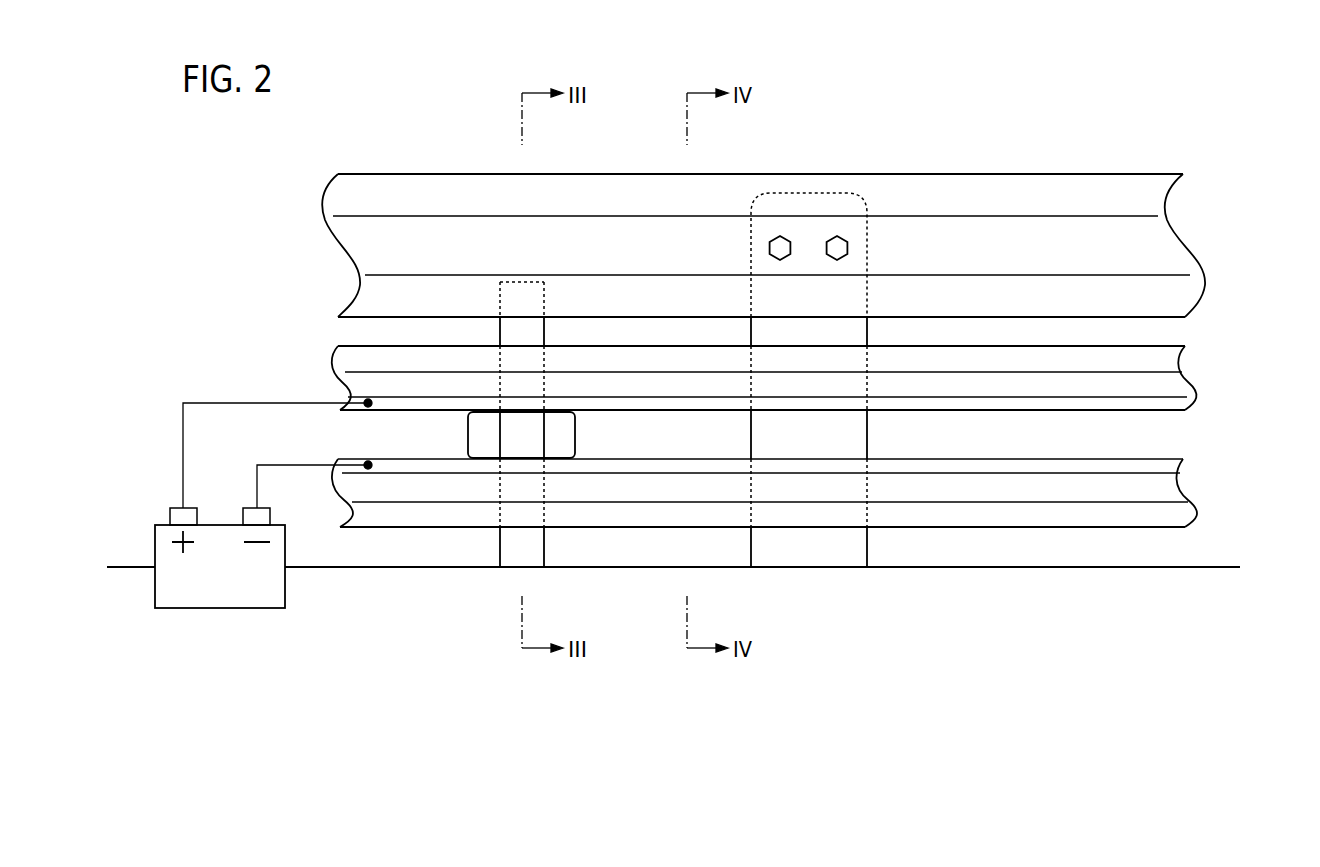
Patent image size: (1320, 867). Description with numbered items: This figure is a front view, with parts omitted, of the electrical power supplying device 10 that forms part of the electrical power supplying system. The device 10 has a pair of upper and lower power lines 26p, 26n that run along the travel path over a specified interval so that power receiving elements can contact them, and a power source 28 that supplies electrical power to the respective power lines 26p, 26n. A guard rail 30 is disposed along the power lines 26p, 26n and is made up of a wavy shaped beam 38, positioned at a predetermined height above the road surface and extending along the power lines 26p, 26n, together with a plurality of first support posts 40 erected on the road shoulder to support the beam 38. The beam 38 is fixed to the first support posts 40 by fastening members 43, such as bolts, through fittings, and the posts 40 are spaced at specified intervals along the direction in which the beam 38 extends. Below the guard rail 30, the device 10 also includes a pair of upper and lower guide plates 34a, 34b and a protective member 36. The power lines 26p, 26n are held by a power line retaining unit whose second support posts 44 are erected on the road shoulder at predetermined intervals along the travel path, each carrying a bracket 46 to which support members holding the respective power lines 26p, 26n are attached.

The electrical power supplying device 10 is at (378, 122).
The power line 26n is at (1180, 467).
The power line 26p is at (1185, 402).
The power source 28 is at (222, 602).
The guard rail 30 is at (1169, 163).
The guide plate 34a is at (1185, 495).
The guide plate 34b is at (1188, 382).
The protective member 36 is at (1186, 345).
The beam 38 is at (1172, 247).
The first support post 40 is at (836, 191).
The fastening member 43 is at (791, 244).
The second support post 44 is at (544, 292).
The bracket 46 is at (573, 440).